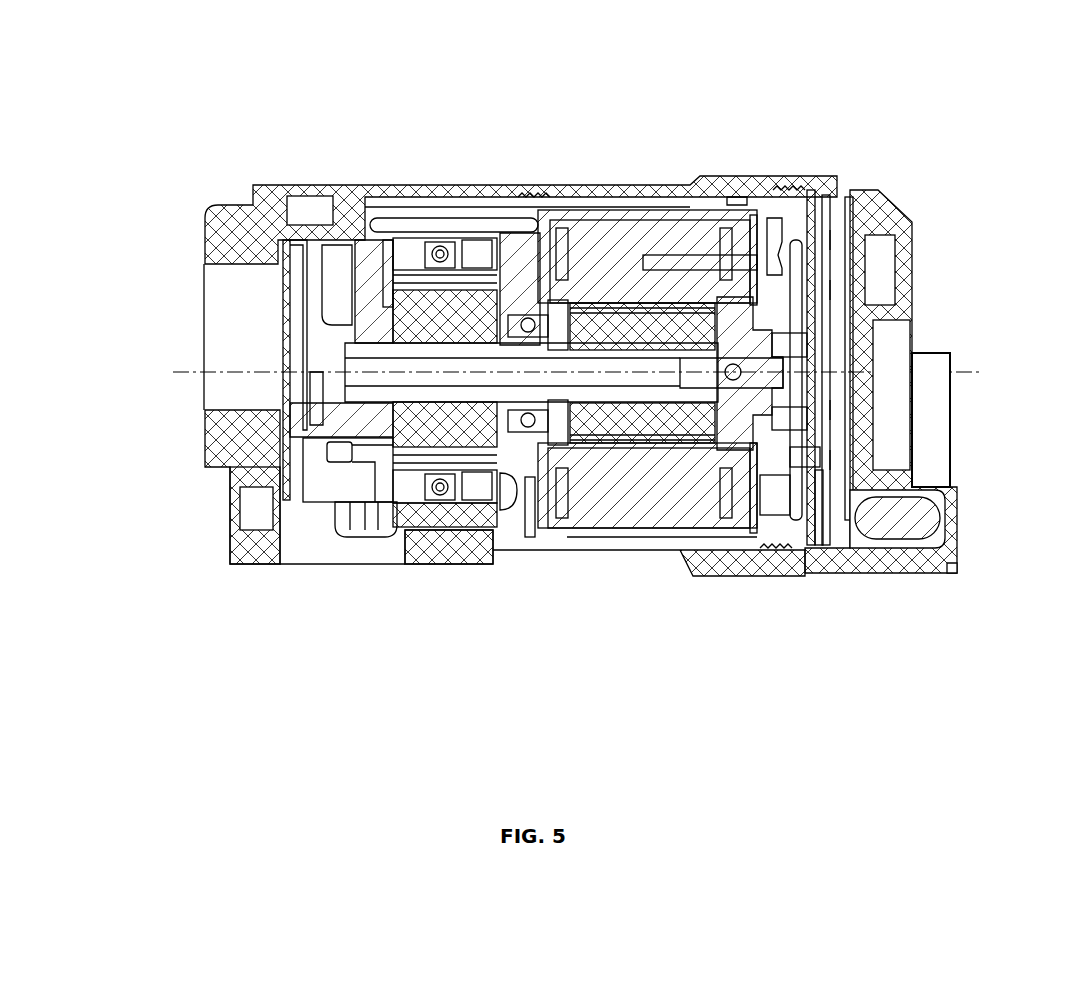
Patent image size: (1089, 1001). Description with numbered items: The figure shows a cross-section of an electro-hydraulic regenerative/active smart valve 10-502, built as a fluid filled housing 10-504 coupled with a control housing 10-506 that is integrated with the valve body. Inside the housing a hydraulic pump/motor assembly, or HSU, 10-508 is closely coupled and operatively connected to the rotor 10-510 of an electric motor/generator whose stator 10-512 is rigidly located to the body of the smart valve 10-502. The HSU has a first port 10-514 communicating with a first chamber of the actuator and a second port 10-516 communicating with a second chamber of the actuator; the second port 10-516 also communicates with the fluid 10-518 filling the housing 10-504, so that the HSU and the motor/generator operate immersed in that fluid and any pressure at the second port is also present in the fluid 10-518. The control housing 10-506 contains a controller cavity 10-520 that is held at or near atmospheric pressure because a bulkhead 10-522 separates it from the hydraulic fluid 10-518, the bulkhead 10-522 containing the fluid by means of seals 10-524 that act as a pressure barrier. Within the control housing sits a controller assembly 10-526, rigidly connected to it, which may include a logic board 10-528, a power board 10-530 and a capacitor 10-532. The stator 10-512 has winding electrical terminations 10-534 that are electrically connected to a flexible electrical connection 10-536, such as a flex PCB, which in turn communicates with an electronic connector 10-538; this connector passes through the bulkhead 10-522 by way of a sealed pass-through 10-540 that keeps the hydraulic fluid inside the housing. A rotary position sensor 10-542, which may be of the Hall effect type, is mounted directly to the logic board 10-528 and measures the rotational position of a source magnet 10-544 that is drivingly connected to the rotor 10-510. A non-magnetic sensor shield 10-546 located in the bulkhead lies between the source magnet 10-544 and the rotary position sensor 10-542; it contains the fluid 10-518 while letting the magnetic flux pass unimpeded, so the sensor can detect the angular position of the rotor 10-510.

The electro-hydraulic regenerative/active smart valve 502 is at (473, 316).
The fluid filled housing 504 is at (480, 555).
The control housing 506 is at (937, 366).
The hydraulic pump/motor assembly (HSU) 508 is at (443, 438).
The rotor 510 is at (660, 325).
The stator 512 is at (645, 488).
The first port 514 is at (317, 465).
The second port 516 is at (283, 537).
The fluid 518 is at (415, 205).
The controller cavity 520 is at (837, 338).
The bulkhead 522 is at (846, 188).
The seal 524 is at (526, 188).
The controller assembly 526 is at (766, 277).
The logic board 528 is at (823, 518).
The power board 530 is at (247, 370).
The capacitor 532 is at (910, 527).
The winding electrical terminations 534 is at (758, 262).
The flexible electrical connection 536 is at (783, 243).
The electronic connector 538 is at (805, 462).
The sealed pass-through 540 is at (775, 495).
The rotary position sensor 542 is at (817, 377).
The source magnet 544 is at (780, 343).
The non-magnetic sensor shield 546 is at (810, 280).